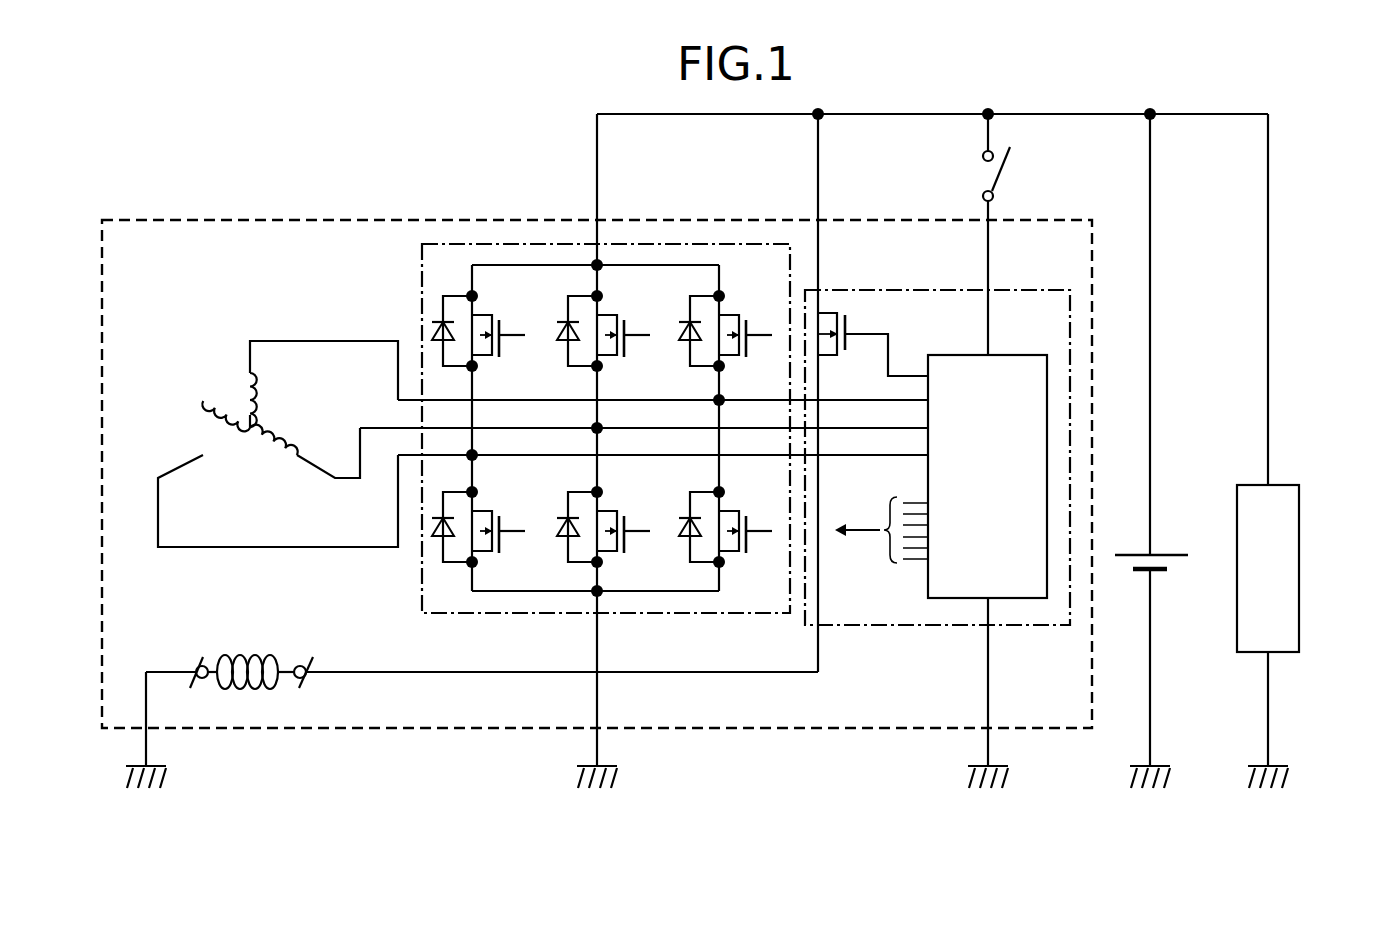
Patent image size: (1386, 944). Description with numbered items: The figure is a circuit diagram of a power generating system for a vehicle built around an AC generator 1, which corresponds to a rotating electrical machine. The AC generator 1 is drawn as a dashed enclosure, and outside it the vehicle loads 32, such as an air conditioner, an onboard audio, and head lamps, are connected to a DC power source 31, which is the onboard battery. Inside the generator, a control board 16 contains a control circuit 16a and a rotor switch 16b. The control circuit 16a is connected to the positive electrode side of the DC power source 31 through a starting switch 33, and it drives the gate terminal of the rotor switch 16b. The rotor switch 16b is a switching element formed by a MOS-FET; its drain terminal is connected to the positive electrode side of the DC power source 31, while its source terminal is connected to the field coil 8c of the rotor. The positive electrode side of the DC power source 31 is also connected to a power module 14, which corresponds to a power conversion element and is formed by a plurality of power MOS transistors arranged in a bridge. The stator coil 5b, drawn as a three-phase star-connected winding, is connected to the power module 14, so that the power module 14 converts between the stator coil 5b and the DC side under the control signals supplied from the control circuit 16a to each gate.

The AC generator 1 is at (178, 219).
The power module 14 is at (503, 244).
The stator coil 5b is at (205, 350).
The field coil 8c is at (225, 634).
The control board 16 is at (897, 630).
The control circuit 16a is at (956, 355).
The rotor switch 16b is at (852, 312).
The DC power source 31 is at (1180, 512).
The vehicle loads 32 is at (1300, 556).
The starting switch 33 is at (1030, 172).